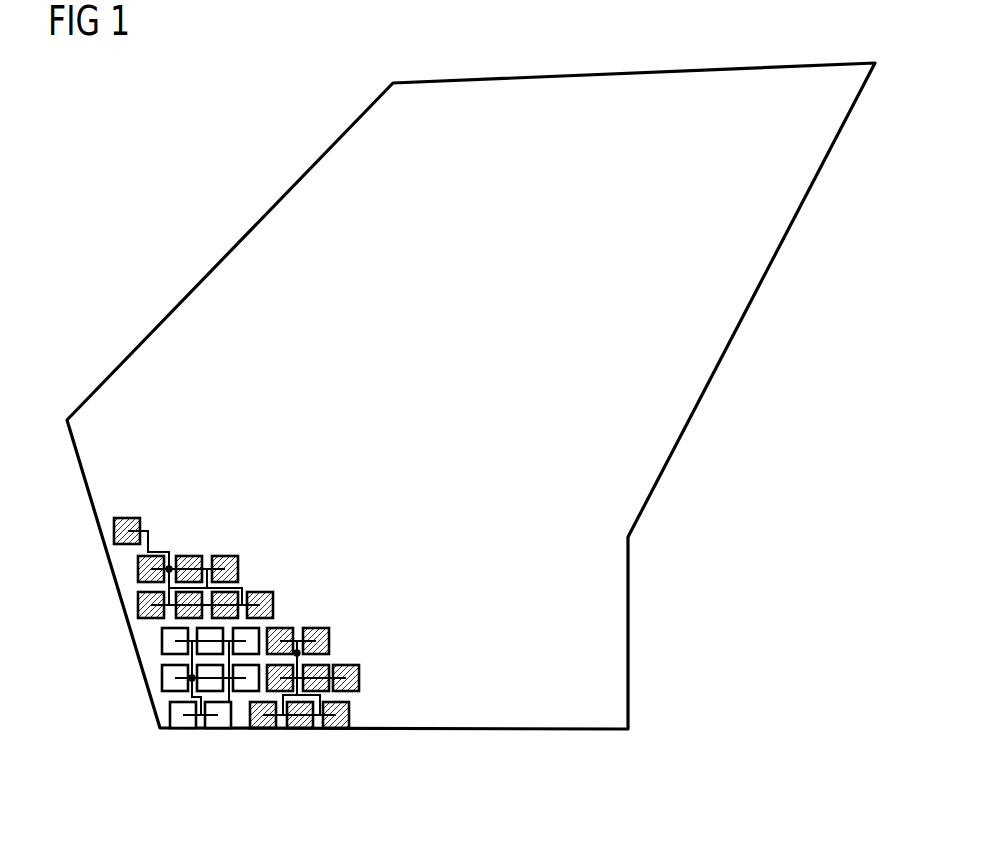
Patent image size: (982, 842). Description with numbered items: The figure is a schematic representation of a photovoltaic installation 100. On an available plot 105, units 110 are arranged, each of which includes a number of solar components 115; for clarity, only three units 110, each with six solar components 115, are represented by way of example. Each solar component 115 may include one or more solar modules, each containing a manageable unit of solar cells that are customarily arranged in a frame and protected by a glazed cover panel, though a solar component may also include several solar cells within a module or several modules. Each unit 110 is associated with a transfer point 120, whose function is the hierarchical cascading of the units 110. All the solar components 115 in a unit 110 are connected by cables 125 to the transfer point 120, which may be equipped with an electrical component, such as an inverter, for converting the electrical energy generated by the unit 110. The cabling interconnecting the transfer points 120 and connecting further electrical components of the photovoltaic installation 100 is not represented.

The photovoltaic installation 100 is at (336, 80).
The available plot 105 is at (634, 72).
The unit 110 is at (212, 515).
The solar component 115 is at (317, 628).
The transfer point 120 is at (300, 653).
The cable 125 is at (322, 728).